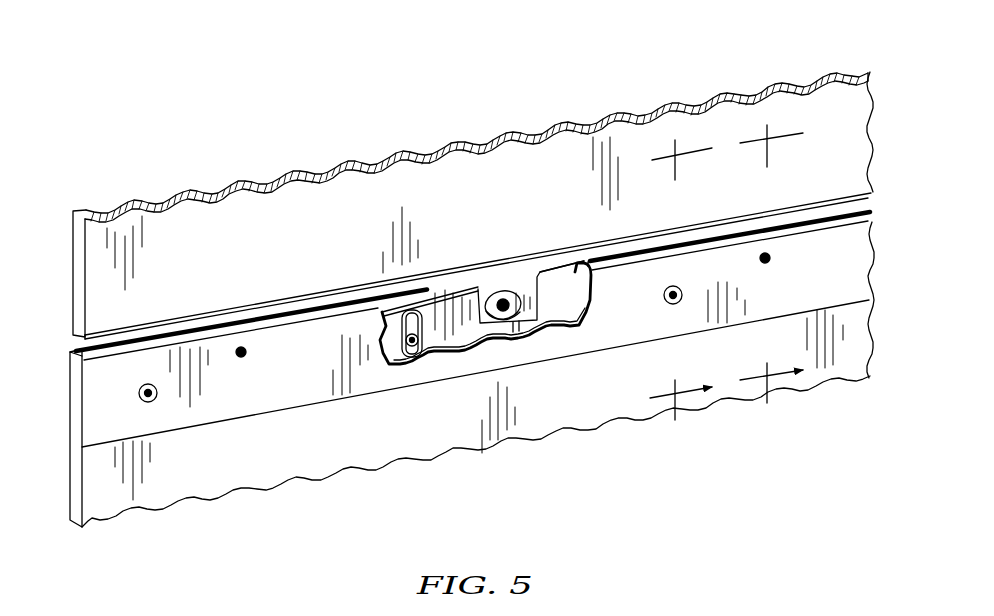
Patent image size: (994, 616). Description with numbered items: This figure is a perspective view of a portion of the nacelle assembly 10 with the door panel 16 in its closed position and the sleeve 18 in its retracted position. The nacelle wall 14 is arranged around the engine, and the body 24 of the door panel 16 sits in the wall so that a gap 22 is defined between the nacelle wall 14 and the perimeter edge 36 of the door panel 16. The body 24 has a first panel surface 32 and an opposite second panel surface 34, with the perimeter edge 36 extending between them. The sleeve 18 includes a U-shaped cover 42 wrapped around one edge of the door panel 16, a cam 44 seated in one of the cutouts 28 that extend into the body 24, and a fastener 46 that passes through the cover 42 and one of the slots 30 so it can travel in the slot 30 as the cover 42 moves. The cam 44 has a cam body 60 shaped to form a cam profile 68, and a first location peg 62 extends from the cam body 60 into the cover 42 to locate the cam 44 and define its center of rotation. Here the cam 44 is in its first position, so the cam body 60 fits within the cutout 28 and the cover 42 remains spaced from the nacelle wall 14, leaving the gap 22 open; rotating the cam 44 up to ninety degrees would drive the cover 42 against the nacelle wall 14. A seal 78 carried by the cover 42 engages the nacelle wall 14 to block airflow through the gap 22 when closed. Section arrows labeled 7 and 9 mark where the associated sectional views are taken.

The nacelle assembly 10 is at (105, 143).
The nacelle wall 14 is at (886, 93).
The door panel 16 is at (882, 378).
The sleeve 18 is at (873, 200).
The gap 22 is at (448, 265).
The body 24 is at (840, 360).
The cutouts 28 is at (528, 336).
The slots 30 is at (408, 368).
The first panel surface 32 is at (155, 492).
The second panel surface 34 is at (70, 466).
The perimeter edge 36 is at (598, 258).
The U-shaped cover 42 is at (876, 262).
The cam 44 is at (531, 266).
The fastener 46 is at (145, 384).
The cam body 60 is at (513, 335).
The first location peg 62 is at (255, 368).
The cam profile 68 is at (503, 282).
The seal 78 is at (64, 348).
The section line 7 is at (771, 278).
The section line 9 is at (681, 294).